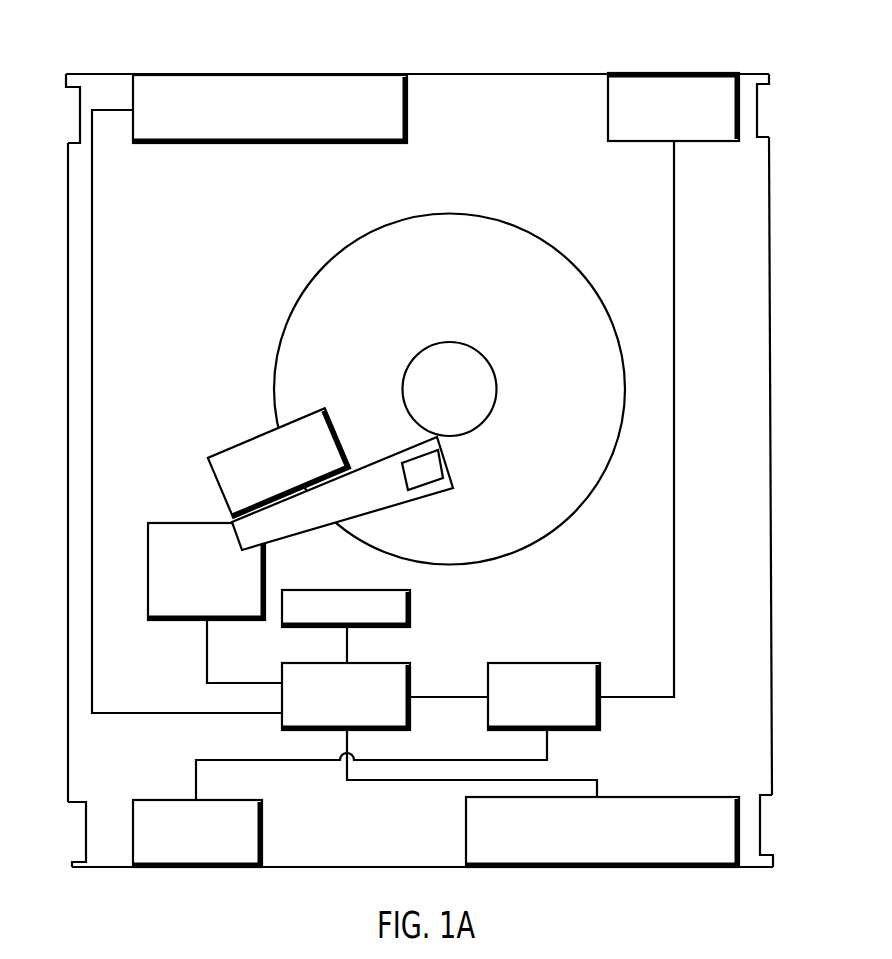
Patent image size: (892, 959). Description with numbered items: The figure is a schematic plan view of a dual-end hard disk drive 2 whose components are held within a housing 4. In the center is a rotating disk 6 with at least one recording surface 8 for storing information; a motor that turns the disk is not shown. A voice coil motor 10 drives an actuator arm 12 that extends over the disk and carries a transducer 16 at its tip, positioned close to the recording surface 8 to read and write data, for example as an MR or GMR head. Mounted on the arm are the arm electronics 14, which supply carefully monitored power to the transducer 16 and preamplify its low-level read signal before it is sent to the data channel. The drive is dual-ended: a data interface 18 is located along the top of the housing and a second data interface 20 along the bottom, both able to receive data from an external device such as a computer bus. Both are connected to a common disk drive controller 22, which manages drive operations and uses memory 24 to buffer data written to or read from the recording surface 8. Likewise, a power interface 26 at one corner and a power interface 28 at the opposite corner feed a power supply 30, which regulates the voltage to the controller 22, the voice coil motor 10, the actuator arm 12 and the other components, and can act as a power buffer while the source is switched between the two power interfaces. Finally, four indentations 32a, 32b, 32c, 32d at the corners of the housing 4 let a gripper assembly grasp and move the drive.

The dual-end hard disk drive 2 is at (249, 68).
The housing 4 is at (481, 72).
The rotating disk 6 is at (549, 243).
The recording surface 8 is at (522, 336).
The voice coil motor 10 is at (166, 522).
The actuator arm 12 is at (358, 466).
The arm electronics 14 is at (232, 446).
The transducer 16 is at (440, 462).
The data interface 18 is at (408, 108).
The data interface 20 is at (695, 796).
The disk drive controller 22 is at (413, 672).
The memory 24 is at (413, 608).
The power interface 26 is at (608, 106).
The power interface 28 is at (153, 799).
The power supply 30 is at (546, 661).
The indentation 32a is at (72, 118).
The indentation 32b is at (78, 830).
The indentation 32c is at (769, 825).
The indentation 32d is at (764, 113).